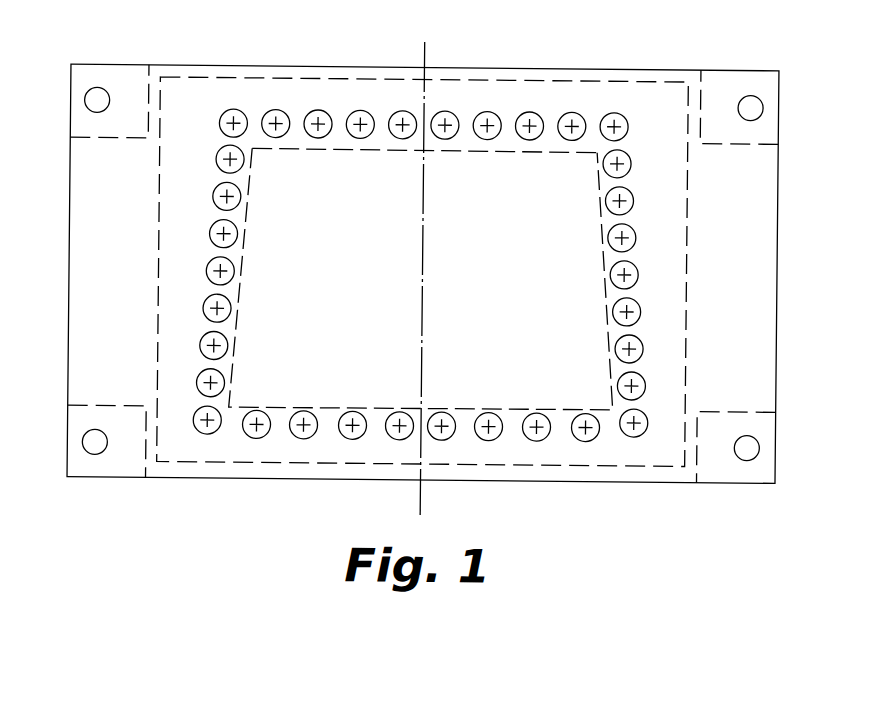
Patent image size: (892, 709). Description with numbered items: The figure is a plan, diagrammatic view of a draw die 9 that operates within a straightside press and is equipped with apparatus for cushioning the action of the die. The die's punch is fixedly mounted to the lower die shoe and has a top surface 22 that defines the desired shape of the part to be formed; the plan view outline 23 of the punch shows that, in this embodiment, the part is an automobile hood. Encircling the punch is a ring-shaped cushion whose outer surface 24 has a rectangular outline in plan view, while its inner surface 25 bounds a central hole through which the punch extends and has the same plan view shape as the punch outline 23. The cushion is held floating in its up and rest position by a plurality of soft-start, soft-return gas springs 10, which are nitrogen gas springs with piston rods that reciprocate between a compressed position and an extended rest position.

The draw die 9 is at (102, 485).
The soft-start, soft-return gas springs 10 is at (634, 207).
The top surface 22 is at (503, 240).
The plan view outline 23 is at (383, 146).
The outer surface 24 is at (159, 248).
The inner surface 25 is at (346, 144).